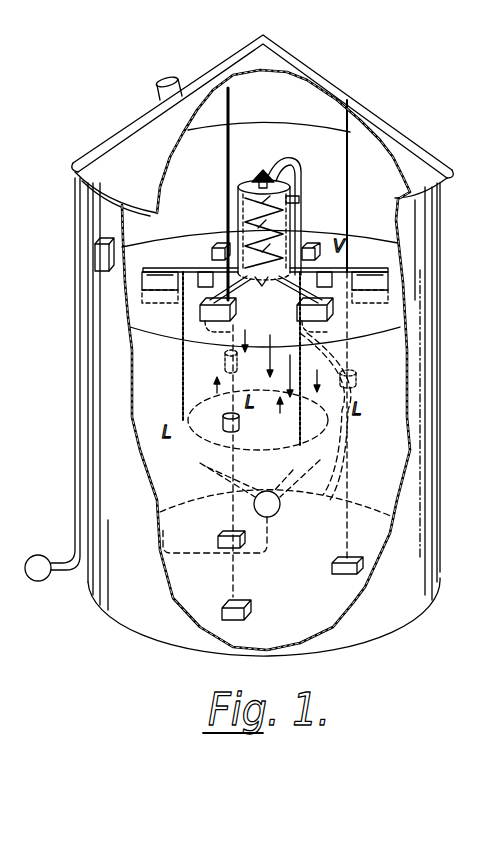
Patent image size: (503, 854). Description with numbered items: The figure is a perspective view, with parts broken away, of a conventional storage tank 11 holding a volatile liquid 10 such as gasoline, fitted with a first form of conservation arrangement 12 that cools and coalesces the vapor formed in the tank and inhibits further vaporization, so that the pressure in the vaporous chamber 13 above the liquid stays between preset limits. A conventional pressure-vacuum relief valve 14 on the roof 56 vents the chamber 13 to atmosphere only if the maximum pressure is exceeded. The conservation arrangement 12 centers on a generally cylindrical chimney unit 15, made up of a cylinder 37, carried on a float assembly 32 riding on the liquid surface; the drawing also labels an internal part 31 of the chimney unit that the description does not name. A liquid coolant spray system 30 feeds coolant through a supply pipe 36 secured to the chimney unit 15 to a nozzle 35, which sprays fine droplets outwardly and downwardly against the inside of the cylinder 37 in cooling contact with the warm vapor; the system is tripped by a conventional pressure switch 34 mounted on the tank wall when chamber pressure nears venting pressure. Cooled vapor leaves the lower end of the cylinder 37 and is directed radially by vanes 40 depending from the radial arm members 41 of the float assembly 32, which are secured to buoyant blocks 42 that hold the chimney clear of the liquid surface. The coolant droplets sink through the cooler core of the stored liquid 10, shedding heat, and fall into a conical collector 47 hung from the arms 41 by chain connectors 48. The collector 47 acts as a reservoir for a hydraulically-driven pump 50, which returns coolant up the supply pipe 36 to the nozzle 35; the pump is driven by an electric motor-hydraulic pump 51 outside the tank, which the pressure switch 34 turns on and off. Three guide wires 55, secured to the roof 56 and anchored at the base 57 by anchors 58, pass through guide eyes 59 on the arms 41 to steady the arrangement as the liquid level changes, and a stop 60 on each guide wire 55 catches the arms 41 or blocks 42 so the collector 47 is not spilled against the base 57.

The volatile liquid 10 is at (392, 383).
The storage tank 11 is at (391, 93).
The conservation arrangement 12 is at (173, 379).
The vaporous chamber 13 is at (378, 173).
The pressure-vacuum relief valve 14 is at (157, 88).
The chimney unit 15 is at (213, 220).
The liquid coolant spray system 30 is at (244, 171).
The screw 31 is at (285, 236).
The float assembly 32 is at (203, 317).
The pressure switch 34 is at (98, 258).
The nozzle 35 is at (263, 168).
The supply pipe 36 is at (291, 161).
The cylinder 37 is at (299, 195).
The vanes 40 is at (207, 282).
The radial arm members 41 is at (388, 266).
The buoyant blocks 42 is at (383, 283).
The conical collector 47 is at (293, 470).
The chain connectors 48 is at (182, 400).
The pump 50 is at (272, 520).
The electric motor-hydraulic pump 51 is at (47, 581).
The guide wires 55 is at (349, 470).
The roof 56 is at (276, 56).
The base 57 is at (305, 626).
The anchors 58 is at (242, 606).
The guide eyes 59 is at (228, 292).
The stop 60 is at (225, 358).